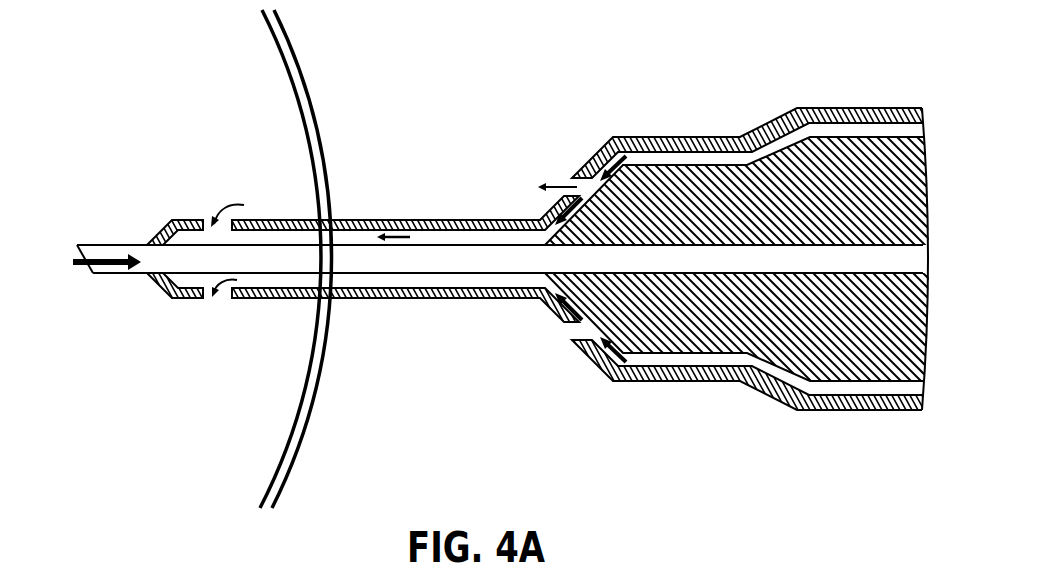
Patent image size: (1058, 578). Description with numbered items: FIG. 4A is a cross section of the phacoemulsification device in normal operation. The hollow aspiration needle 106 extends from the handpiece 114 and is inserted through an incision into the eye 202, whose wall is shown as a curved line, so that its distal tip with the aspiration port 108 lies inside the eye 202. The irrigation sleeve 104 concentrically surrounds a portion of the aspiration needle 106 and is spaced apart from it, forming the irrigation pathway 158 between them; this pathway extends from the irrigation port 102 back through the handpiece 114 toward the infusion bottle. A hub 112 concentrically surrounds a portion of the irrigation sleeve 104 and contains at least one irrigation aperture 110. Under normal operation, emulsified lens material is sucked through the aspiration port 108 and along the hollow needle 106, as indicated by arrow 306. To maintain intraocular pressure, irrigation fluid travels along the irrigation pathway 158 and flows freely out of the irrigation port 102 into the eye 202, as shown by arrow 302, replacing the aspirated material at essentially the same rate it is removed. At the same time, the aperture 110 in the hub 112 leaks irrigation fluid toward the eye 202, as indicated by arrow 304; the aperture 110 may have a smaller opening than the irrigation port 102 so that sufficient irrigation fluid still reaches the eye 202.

The irrigation port 102 is at (215, 322).
The irrigation sleeve 104 is at (483, 298).
The hollow aspiration needle 106 is at (88, 250).
The aspiration port 108 is at (70, 274).
The irrigation aperture 110 is at (563, 156).
The hub 112 is at (590, 355).
The handpiece 114 is at (898, 108).
The irrigation pathway 158 is at (468, 230).
The eye 202 is at (327, 154).
The arrow indicating irrigation fluid flow 302 is at (247, 245).
The arrow indicating aperture leakage flow 304 is at (553, 185).
The arrow indicating aspiration flow 306 is at (107, 258).